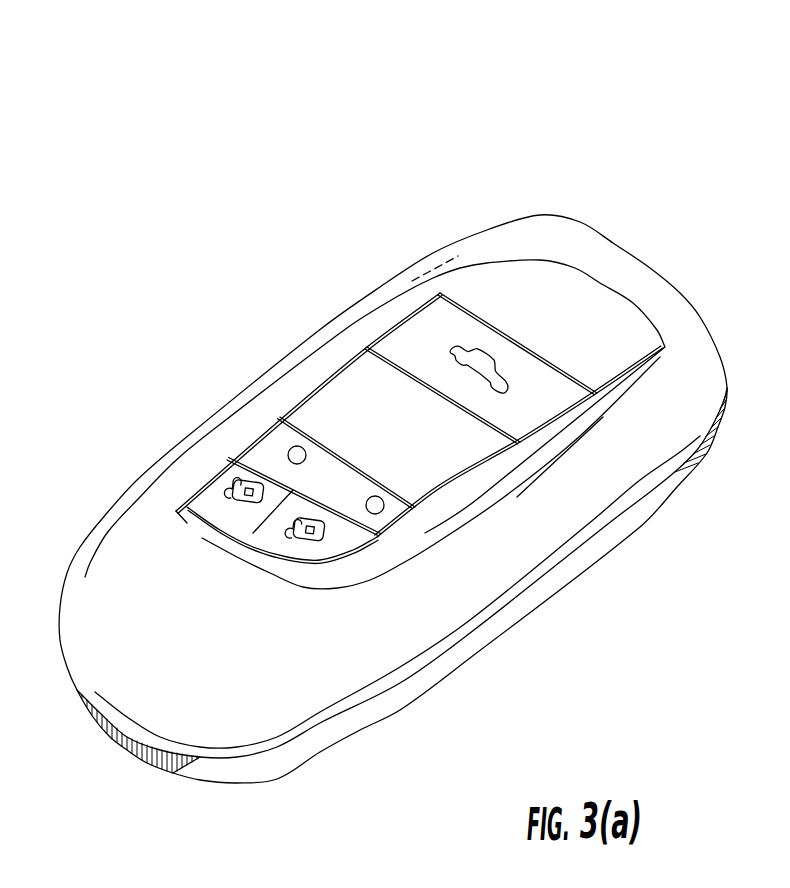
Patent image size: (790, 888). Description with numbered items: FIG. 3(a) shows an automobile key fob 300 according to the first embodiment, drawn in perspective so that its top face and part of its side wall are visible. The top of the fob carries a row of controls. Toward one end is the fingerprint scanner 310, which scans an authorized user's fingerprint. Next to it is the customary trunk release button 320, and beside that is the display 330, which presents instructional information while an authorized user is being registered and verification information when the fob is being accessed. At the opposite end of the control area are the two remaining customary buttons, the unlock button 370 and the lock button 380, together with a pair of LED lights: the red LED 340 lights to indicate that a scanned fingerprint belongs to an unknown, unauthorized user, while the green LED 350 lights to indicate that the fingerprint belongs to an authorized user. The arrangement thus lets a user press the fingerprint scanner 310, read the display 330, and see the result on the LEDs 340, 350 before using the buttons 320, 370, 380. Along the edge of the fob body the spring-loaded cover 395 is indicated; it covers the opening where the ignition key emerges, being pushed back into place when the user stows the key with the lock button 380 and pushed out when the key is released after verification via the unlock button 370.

The key fob 300 is at (643, 127).
The fingerprint scanner 310 is at (527, 296).
The trunk release button 320 is at (442, 348).
The display 330 is at (352, 406).
The red LED 340 is at (284, 453).
The green LED light 350 is at (387, 503).
The unlock button 370 is at (208, 492).
The lock button 380 is at (340, 543).
The spring-loaded cover 395 is at (125, 745).